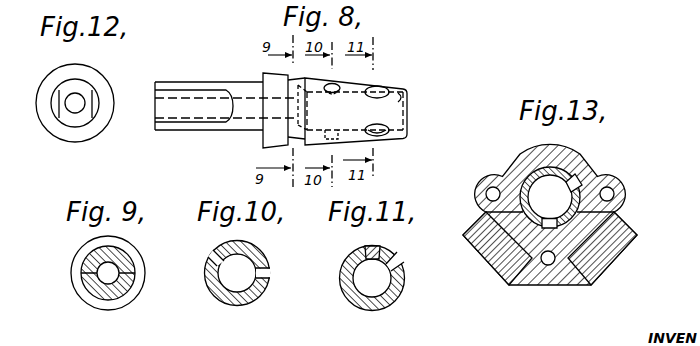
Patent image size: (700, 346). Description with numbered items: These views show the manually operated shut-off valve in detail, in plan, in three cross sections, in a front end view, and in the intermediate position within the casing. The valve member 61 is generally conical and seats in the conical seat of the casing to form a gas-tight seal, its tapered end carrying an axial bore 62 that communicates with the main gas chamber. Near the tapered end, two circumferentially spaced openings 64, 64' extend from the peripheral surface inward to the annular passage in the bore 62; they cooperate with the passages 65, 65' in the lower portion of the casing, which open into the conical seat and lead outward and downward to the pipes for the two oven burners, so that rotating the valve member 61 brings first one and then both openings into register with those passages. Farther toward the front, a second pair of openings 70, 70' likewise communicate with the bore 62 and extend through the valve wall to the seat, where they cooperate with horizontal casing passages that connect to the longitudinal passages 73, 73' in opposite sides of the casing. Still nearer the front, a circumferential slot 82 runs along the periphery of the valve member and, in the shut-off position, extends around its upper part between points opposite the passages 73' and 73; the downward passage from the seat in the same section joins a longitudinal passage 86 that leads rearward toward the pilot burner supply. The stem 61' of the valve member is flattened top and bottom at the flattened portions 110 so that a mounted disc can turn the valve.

In FIG. 12, the valve member 61 is at (85, 110).
In FIG. 8, the valve member 61 is at (362, 117).
In FIG. 9, the valve member 61 is at (105, 283).
In FIG. 10, the valve member 61 is at (238, 284).
In FIG. 11, the valve member 61 is at (383, 278).
In FIG. 13, the valve member 61 is at (561, 218).
In FIG. 12, the stem 61' is at (99, 95).
In FIG. 8, the stem 61' is at (209, 93).
In FIG. 8, the axial bore 62 is at (412, 100).
In FIG. 10, the axial bore 62 is at (232, 282).
In FIG. 11, the axial bore 62 is at (368, 289).
In FIG. 13, the axial bore 62 is at (537, 170).
In FIG. 8, the opening 64 is at (391, 147).
In FIG. 11, the opening 64 is at (411, 262).
In FIG. 13, the opening 64 is at (535, 270).
In FIG. 8, the opening 64' is at (407, 82).
In FIG. 11, the opening 64' is at (346, 249).
In FIG. 13, the opening 64' is at (604, 173).
In FIG. 13, the passage 65 is at (614, 248).
In FIG. 13, the passage 65' is at (497, 259).
In FIG. 8, the opening 70 is at (336, 145).
In FIG. 10, the opening 70 is at (280, 277).
In FIG. 8, the opening 70' is at (381, 69).
In FIG. 10, the opening 70' is at (202, 252).
In FIG. 13, the longitudinal passage 73 is at (633, 191).
In FIG. 13, the longitudinal passage 73' is at (470, 192).
In FIG. 8, the slot 82 is at (296, 100).
In FIG. 9, the slot 82 is at (137, 279).
In FIG. 13, the longitudinal passage 86 is at (550, 264).
In FIG. 12, the flattened portions 110 is at (55, 112).
In FIG. 8, the flattened portions 110 is at (188, 113).